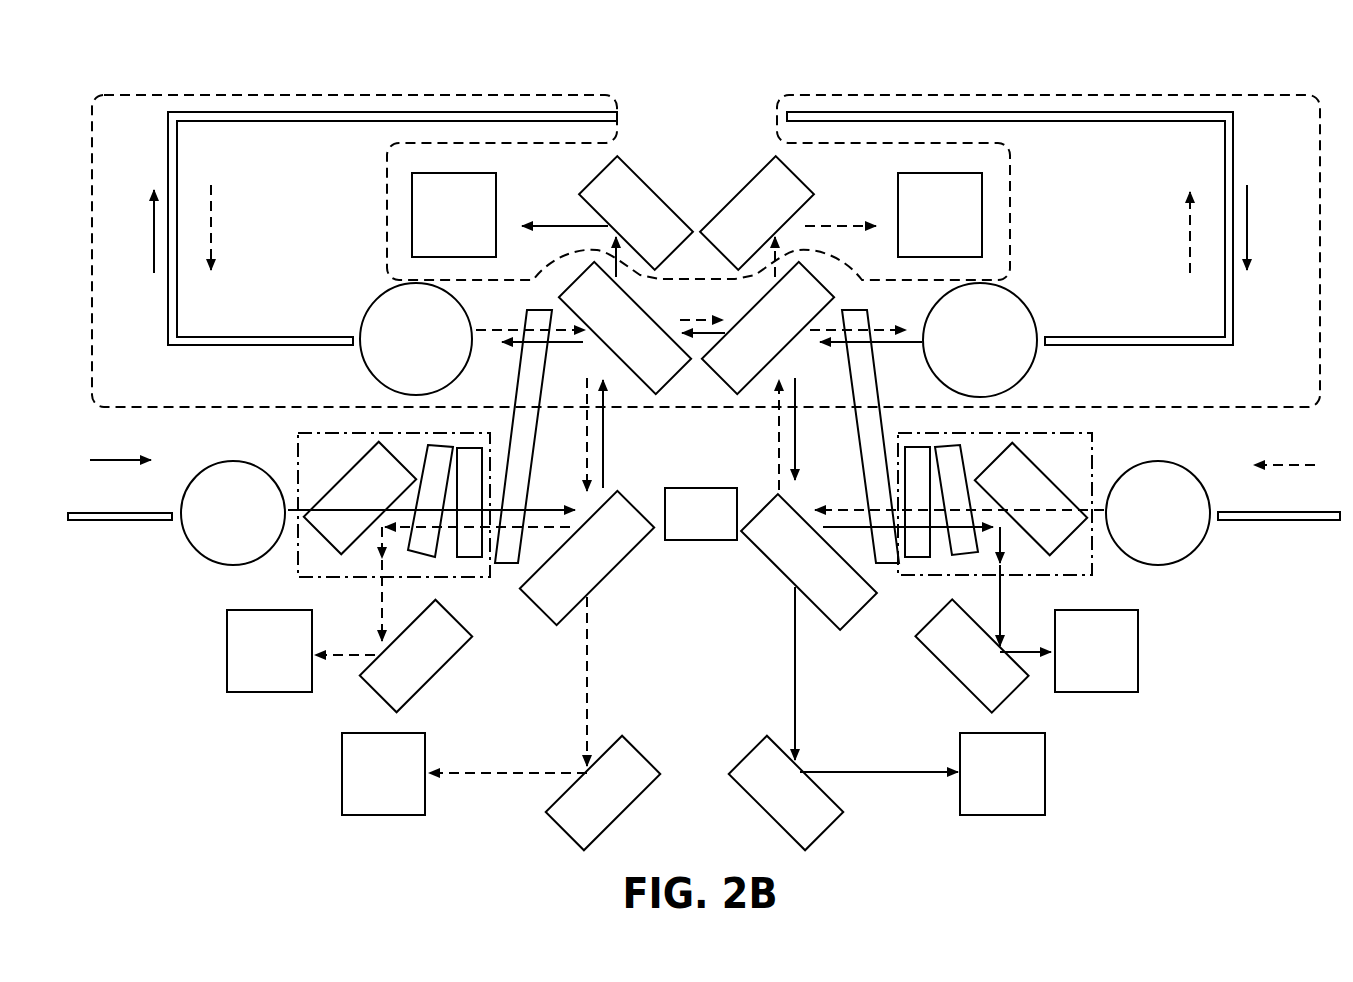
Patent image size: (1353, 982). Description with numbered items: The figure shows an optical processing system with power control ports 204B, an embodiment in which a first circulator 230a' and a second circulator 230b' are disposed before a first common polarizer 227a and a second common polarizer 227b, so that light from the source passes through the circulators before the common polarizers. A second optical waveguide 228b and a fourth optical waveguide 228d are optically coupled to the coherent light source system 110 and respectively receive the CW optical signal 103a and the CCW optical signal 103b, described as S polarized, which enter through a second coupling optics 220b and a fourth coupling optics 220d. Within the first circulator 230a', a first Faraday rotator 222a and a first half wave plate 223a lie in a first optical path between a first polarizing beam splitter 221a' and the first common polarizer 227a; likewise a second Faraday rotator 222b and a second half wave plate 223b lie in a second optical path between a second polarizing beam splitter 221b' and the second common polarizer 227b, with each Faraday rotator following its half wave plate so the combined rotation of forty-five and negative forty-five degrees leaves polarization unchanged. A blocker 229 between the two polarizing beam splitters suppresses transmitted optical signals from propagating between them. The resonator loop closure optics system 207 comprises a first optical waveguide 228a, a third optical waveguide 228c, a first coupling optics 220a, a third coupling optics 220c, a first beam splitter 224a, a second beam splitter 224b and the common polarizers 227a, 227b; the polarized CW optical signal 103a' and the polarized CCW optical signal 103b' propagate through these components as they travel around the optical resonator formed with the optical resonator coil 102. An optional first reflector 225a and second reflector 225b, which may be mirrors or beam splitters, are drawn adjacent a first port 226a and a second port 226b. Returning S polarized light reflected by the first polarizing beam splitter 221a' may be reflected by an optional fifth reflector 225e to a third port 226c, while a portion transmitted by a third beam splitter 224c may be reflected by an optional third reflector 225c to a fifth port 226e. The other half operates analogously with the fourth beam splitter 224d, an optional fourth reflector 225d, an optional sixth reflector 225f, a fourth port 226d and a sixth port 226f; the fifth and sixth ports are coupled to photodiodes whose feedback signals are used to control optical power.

The optical processing system with power control ports 204B is at (700, 43).
The resonator loop closure optics system 207 is at (1108, 92).
The optical resonator coil 102 is at (698, 141).
The polarized CW optical signal 103a' is at (705, 229).
The polarized CCW optical signal 103b' is at (700, 229).
The CW optical signal 103a is at (125, 440).
The CCW optical signal 103b is at (1283, 445).
The coherent light source system 110 is at (700, 650).
The first coupling optics 220a is at (472, 339).
The second coupling optics 220b is at (378, 513).
The third coupling optics 220c is at (923, 340).
The fourth coupling optics 220d is at (1012, 513).
The first polarizing beam splitter 221a' is at (360, 498).
The second polarizing beam splitter 221b' is at (1031, 499).
The first Faraday rotator 222a is at (469, 502).
The second Faraday rotator 222b is at (917, 502).
The first half wave plate 223a is at (430, 501).
The second half wave plate 223b is at (956, 500).
The first beam splitter 224a is at (642, 376).
The second beam splitter 224b is at (768, 376).
The third beam splitter 224c is at (587, 628).
The fourth beam splitter 224d is at (809, 627).
The first reflector 225a is at (607, 216).
The second reflector 225b is at (788, 216).
The third reflector 225c is at (544, 793).
The fourth reflector 225d is at (843, 793).
The fifth reflector 225e is at (393, 656).
The sixth reflector 225f is at (983, 655).
The first port 226a is at (454, 215).
The second port 226b is at (940, 215).
The third port 226c is at (269, 651).
The fourth port 226d is at (1096, 651).
The fifth port 226e is at (383, 774).
The sixth port 226f is at (1002, 774).
The first common polarizer 227a is at (523, 436).
The second common polarizer 227b is at (870, 436).
The first optical waveguide 228a is at (392, 249).
The second optical waveguide 228b is at (120, 541).
The third optical waveguide 228c is at (1010, 250).
The fourth optical waveguide 228d is at (1279, 540).
The blocker 229 is at (701, 514).
The first circulator 230a' is at (434, 537).
The second circulator 230b' is at (957, 539).